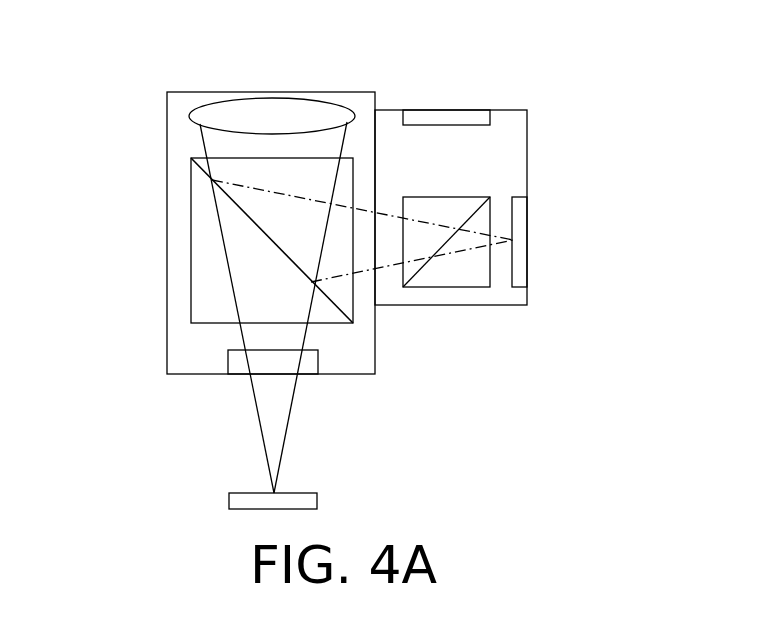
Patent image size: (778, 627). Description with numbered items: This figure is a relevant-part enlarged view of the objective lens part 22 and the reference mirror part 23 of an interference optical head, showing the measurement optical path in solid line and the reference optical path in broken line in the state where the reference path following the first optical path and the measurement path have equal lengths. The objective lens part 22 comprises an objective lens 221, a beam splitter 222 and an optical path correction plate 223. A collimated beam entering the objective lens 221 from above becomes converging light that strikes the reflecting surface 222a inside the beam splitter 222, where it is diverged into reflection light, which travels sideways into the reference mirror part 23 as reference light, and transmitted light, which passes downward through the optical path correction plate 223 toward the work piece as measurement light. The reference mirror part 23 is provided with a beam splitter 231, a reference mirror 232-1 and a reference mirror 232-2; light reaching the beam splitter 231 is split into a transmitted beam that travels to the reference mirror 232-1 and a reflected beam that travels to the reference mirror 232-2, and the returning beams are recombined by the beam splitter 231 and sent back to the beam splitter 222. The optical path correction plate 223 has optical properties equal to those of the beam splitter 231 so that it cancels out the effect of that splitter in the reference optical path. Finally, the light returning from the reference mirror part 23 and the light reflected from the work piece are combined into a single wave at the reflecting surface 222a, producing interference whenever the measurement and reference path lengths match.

The objective lens part 22 is at (228, 92).
The objective lens 221 is at (193, 108).
The beam splitter 222 is at (190, 242).
The reflecting surface 222a is at (197, 167).
The optical path correction plate 223 is at (227, 367).
The reference mirror part 23 is at (528, 305).
The beam splitter 231 is at (452, 288).
The reference mirror 232-1 is at (523, 197).
The reference mirror 232-2 is at (453, 110).